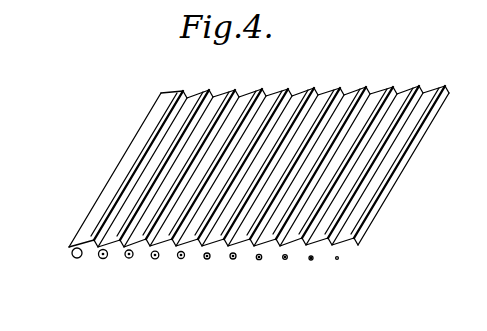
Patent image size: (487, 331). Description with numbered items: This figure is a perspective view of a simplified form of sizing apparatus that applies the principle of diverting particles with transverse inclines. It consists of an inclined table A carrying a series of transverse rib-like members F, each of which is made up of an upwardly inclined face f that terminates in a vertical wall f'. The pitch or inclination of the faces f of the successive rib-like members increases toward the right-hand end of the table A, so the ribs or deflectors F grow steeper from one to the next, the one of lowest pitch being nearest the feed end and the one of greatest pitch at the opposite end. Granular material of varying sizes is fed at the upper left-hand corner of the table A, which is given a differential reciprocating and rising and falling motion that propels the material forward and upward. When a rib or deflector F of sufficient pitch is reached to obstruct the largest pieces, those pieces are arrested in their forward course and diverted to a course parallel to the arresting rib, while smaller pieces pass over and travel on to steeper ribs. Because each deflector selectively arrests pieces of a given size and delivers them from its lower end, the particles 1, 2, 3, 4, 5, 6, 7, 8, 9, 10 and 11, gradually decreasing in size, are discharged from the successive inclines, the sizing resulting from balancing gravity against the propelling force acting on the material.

The table A is at (397, 175).
The rib-like members F is at (177, 85).
The upwardly inclined face f is at (222, 147).
The vertical wall f' is at (258, 144).
The particle 1 is at (75, 265).
The particle 2 is at (101, 267).
The particle 3 is at (127, 266).
The particle 4 is at (153, 267).
The particle 5 is at (179, 268).
The particle 6 is at (206, 268).
The particle 7 is at (232, 268).
The particle 8 is at (258, 268).
The particle 9 is at (284, 269).
The particle 10 is at (310, 269).
The particle 11 is at (338, 270).